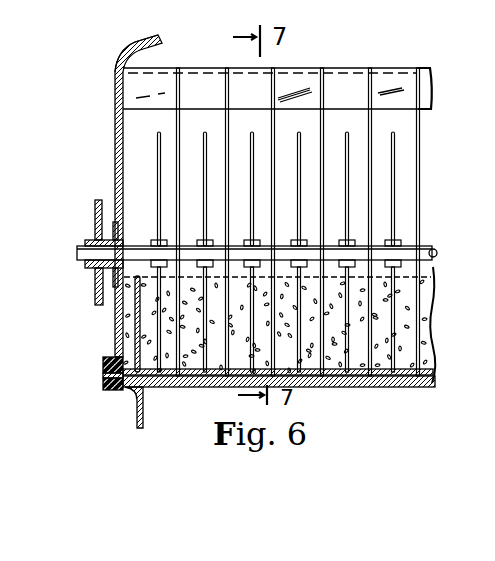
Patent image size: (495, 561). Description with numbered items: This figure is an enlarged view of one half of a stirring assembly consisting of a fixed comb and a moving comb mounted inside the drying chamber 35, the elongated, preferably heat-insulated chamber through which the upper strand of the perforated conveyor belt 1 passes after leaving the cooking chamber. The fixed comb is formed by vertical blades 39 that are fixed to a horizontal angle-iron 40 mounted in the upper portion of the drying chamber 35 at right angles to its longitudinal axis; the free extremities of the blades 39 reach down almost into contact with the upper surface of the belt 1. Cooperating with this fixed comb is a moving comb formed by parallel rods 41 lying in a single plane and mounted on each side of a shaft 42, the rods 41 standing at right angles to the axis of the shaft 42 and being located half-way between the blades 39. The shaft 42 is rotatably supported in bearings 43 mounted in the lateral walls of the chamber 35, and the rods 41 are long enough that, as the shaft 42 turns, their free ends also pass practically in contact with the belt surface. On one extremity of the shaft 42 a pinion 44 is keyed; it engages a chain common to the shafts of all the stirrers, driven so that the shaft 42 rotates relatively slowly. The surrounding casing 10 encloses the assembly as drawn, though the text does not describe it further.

The perforated conveyor belt 1 is at (355, 386).
The casing 10 is at (142, 325).
The drying chamber 35 is at (116, 103).
The vertical blades 39 is at (226, 92).
The horizontal angle-iron 40 is at (350, 77).
The parallel rods 41 is at (205, 162).
The shaft 42 is at (77, 255).
The bearings 43 is at (107, 285).
The pinion 44 is at (95, 222).